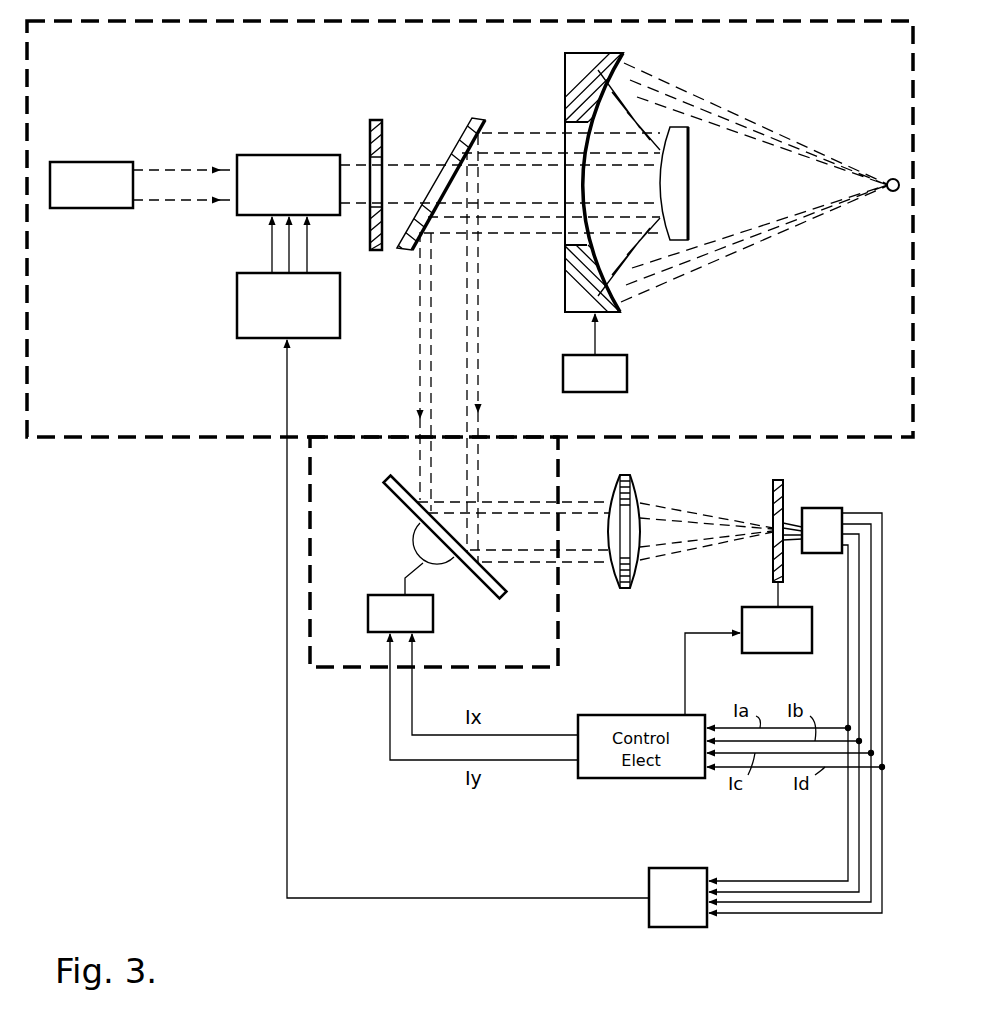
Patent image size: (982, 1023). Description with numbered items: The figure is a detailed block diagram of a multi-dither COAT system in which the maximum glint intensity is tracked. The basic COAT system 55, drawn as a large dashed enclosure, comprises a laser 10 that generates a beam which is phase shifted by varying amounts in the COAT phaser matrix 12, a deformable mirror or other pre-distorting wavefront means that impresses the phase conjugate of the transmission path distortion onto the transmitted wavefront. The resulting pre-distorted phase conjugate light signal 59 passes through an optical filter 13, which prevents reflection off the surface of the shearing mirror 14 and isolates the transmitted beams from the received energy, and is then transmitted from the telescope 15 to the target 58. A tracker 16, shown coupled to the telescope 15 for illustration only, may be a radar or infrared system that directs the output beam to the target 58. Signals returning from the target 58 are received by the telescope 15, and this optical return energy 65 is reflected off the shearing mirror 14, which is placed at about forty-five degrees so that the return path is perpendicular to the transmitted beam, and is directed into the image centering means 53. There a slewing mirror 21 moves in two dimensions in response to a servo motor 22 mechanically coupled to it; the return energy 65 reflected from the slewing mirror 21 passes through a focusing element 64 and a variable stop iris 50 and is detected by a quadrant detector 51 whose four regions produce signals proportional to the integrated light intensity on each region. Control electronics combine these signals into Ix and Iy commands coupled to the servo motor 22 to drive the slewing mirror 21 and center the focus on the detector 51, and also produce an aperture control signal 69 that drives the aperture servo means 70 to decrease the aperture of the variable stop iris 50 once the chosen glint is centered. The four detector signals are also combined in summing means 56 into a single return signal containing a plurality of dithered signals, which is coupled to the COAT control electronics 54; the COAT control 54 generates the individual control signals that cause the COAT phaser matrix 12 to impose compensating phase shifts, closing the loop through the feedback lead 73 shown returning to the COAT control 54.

The laser 10 is at (133, 163).
The COAT phaser matrix 12 is at (340, 157).
The optical filter 13 is at (378, 120).
The shearing mirror 14 is at (483, 118).
The telescope 15 is at (620, 56).
The tracker 16 is at (627, 357).
The slewing mirror 21 is at (395, 500).
The servo motor 22 is at (473, 677).
The variable stop iris 50 is at (783, 483).
The quadrant detector 51 is at (832, 508).
The image centering means 53 is at (370, 672).
The COAT control electronics 54 is at (237, 273).
The basic COAT system 55 is at (95, 440).
The summing means 56 is at (705, 868).
The target 58 is at (893, 178).
The pre-distorted phase conjugate light signal 59 is at (428, 166).
The focusing element 64 is at (628, 477).
The optical return energy 65 is at (423, 318).
The aperture control signal 69 is at (740, 633).
The aperture servo means 70 is at (788, 617).
The feedback line 73 is at (527, 898).